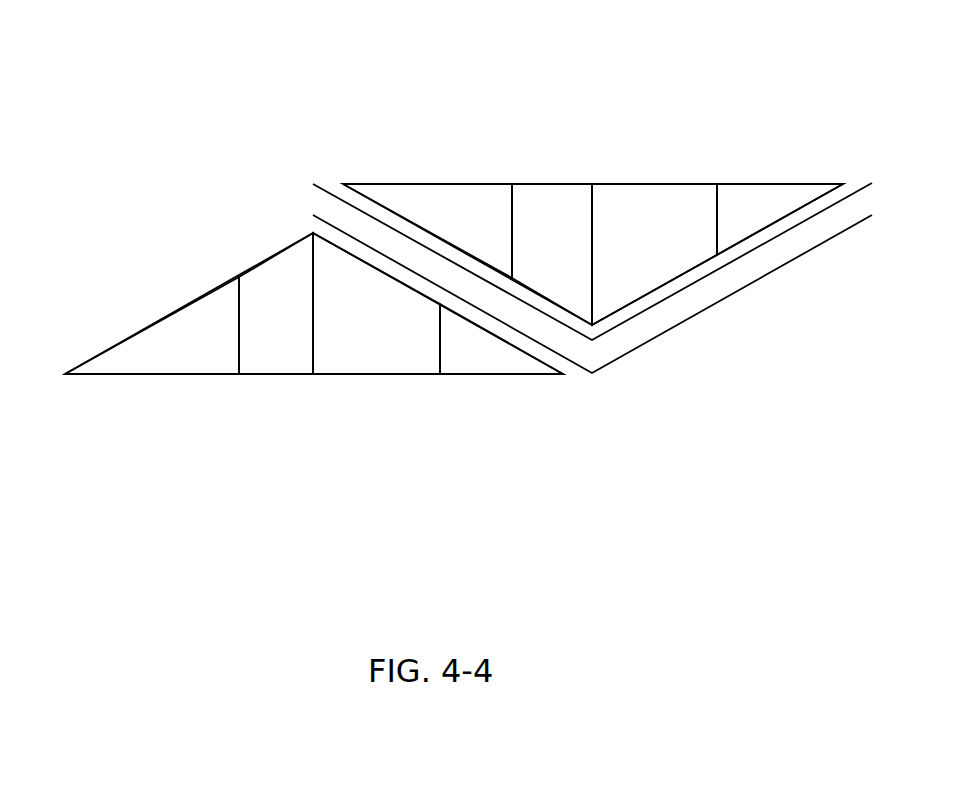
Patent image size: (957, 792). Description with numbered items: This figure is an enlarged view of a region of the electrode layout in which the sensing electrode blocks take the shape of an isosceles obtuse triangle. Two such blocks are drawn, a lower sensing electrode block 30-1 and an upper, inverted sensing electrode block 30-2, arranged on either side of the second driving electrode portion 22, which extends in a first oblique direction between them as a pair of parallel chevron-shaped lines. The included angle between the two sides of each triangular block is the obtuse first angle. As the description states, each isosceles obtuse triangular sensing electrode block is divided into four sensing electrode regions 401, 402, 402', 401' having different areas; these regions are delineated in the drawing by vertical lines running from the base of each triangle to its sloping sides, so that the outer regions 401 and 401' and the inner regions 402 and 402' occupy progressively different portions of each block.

The second driving electrode portion 22 is at (338, 218).
The sensing electrode block 30-1 is at (347, 337).
The sensing electrode block 30-2 is at (677, 227).
The sensing electrode region 401 is at (288, 278).
The sensing electrode region 402 is at (400, 278).
The sensing electrode region 402' is at (515, 282).
The sensing electrode region 401' is at (641, 276).